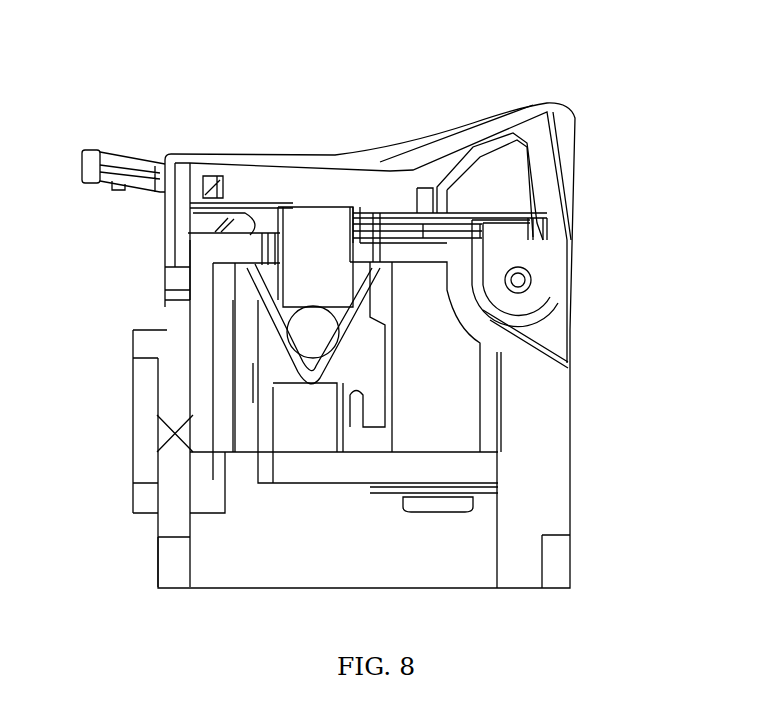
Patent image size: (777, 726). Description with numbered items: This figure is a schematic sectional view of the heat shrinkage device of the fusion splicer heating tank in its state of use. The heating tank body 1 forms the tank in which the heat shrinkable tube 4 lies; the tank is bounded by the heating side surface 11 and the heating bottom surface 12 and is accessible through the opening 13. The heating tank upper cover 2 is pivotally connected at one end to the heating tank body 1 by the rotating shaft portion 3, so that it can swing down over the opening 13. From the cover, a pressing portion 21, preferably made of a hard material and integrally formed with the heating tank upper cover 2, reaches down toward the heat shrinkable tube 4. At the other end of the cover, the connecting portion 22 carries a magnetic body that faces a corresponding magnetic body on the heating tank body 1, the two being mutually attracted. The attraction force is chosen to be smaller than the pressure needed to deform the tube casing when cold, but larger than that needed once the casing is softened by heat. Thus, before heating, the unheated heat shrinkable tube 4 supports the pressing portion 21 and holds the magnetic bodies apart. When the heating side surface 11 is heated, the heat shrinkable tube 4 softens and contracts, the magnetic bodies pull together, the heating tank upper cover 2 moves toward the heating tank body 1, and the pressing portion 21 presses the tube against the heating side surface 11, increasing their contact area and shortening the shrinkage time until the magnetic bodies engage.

The heating tank body 1 is at (548, 457).
The heating tank upper cover 2 is at (543, 106).
The rotating shaft portion 3 is at (527, 281).
The heat shrinkable tube 4 is at (317, 327).
The heating side surface 11 is at (272, 320).
The heating bottom surface 12 is at (313, 378).
The opening 13 is at (275, 288).
The pressing portion 21 is at (320, 250).
The connecting portion 22 is at (165, 235).